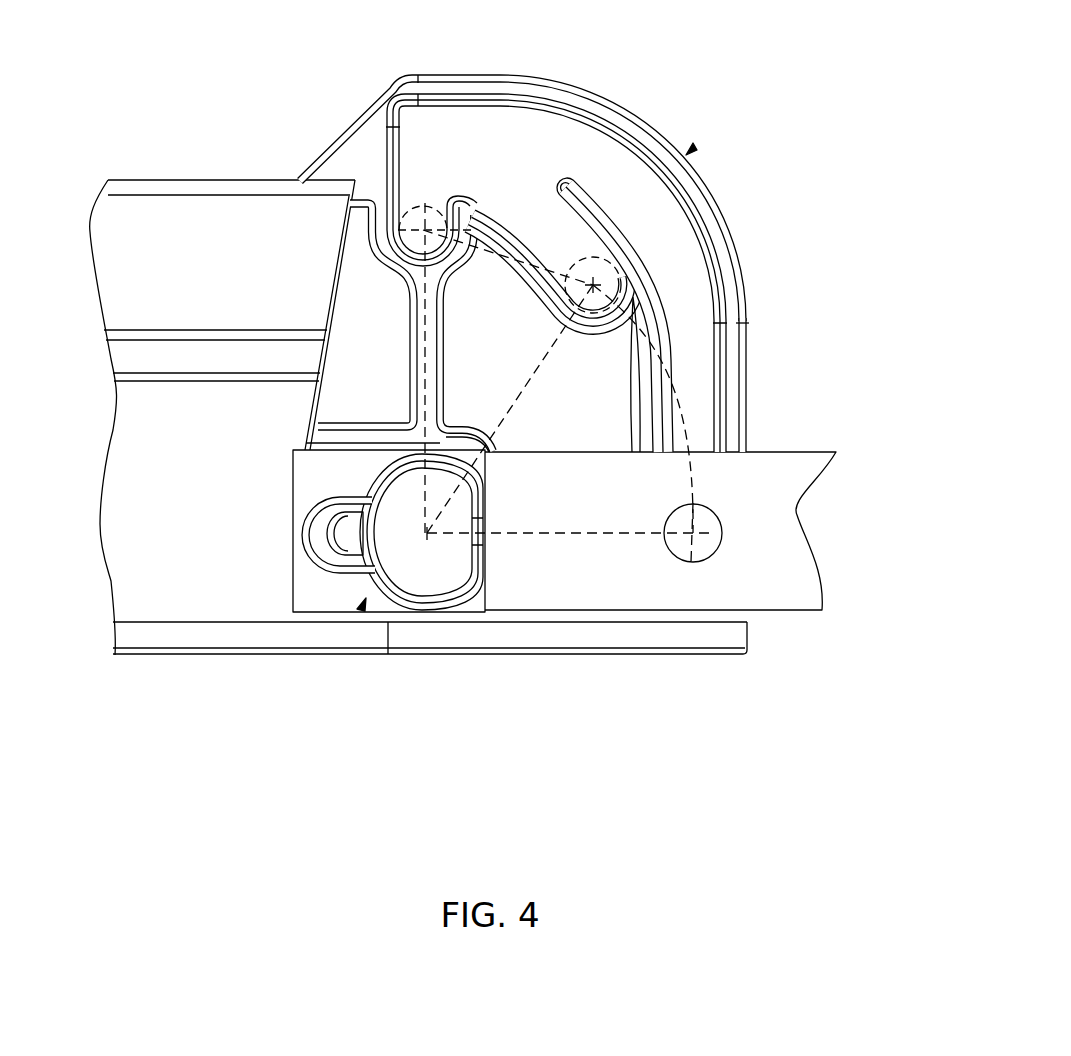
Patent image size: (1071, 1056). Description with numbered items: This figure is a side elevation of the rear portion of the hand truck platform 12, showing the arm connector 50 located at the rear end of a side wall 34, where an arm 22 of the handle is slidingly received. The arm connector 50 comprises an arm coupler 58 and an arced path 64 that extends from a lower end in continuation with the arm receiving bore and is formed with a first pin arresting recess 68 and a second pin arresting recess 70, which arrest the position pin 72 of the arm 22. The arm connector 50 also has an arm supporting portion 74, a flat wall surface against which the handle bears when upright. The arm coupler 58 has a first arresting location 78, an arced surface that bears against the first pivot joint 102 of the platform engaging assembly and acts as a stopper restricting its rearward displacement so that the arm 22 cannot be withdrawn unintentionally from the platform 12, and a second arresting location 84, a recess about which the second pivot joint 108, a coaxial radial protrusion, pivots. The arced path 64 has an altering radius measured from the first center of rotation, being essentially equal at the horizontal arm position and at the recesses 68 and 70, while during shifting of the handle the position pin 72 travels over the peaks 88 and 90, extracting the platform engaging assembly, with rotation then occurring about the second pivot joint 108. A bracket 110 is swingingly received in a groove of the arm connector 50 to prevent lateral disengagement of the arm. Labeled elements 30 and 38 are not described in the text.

The platform 12 is at (105, 400).
The arm 22 is at (770, 530).
The upper panel flange 30 is at (208, 180).
The side wall 34 is at (180, 520).
The housing outer wall 38 is at (755, 410).
The arm connector 50 is at (688, 152).
The arm coupler 58 is at (366, 600).
The arced path 64 is at (685, 263).
The first pin arresting recess 68 is at (580, 260).
The second pin arresting recess 70 is at (420, 198).
The position pin 72 is at (718, 510).
The arm supporting portion 74 is at (359, 290).
The first arresting location 78 is at (490, 437).
The second arresting location 84 is at (420, 600).
The peak 88 is at (468, 198).
The peak 90 is at (503, 118).
The first pivot joint 102 is at (493, 600).
The second pivot joint 108 is at (330, 572).
The bracket 110 is at (365, 490).